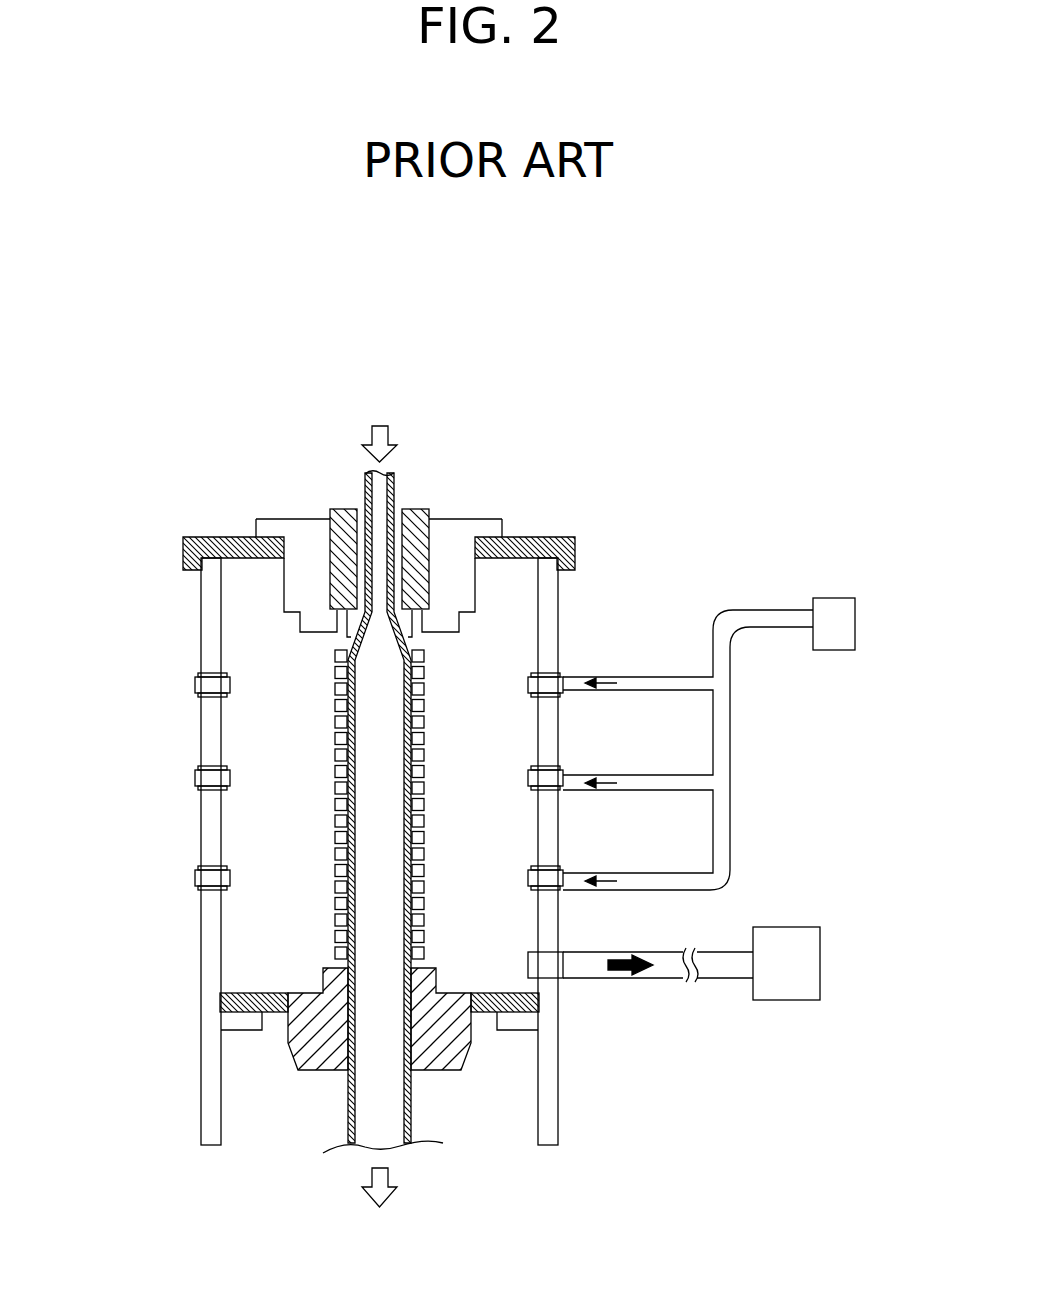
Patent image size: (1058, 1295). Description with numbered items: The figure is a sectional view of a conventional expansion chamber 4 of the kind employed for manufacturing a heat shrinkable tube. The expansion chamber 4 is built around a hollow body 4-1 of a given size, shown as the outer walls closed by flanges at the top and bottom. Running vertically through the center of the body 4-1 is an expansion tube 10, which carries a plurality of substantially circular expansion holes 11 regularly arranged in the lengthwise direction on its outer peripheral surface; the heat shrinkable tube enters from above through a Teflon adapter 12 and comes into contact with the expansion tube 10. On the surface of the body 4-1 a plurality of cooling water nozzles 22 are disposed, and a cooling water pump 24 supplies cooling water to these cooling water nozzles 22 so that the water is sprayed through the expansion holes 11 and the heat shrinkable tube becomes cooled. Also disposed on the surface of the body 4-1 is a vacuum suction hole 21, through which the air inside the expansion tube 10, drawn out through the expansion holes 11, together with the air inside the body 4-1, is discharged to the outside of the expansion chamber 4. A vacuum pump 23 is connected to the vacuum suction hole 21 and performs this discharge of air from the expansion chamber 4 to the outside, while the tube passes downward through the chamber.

The expansion chamber 4 is at (692, 315).
The hollow body 4-1 is at (200, 633).
The expansion tube 10 is at (310, 515).
The expansion holes 11 is at (443, 680).
The Teflon adapter 12 is at (413, 508).
The vacuum suction hole 21 is at (540, 970).
The cooling water nozzles 22 is at (203, 686).
The vacuum pump 23 is at (785, 927).
The cooling water pump 24 is at (833, 630).